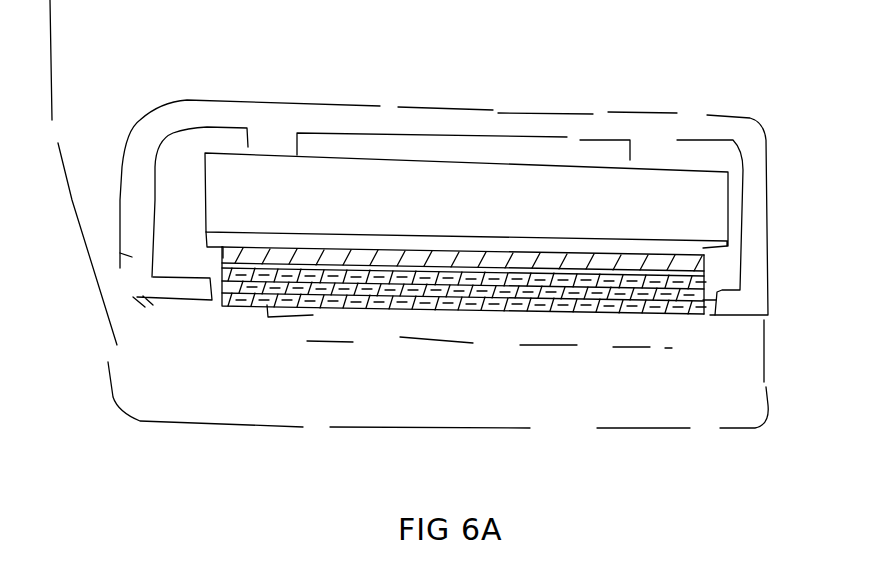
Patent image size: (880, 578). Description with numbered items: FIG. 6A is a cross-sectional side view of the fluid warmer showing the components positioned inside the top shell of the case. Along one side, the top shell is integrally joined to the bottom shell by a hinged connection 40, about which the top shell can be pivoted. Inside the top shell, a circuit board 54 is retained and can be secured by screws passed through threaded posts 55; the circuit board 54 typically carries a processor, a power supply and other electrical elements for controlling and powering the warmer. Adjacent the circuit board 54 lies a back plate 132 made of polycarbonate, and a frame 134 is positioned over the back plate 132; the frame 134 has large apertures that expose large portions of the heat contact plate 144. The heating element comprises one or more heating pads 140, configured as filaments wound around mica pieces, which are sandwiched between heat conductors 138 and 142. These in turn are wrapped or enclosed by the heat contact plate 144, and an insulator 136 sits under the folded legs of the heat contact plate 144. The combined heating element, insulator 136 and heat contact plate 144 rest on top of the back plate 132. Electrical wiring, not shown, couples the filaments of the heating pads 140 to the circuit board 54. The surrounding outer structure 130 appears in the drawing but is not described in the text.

The hinged connection 40 is at (157, 276).
The circuit board 54 is at (466, 199).
The threaded posts 55 is at (306, 145).
The bezel frame 130 is at (200, 113).
The back plate 132 is at (703, 250).
The frame 134 is at (700, 258).
The insulator 136 is at (641, 317).
The heat conductor 138 is at (302, 310).
The heating pads 140 is at (500, 310).
The heat conductor 142 is at (318, 308).
The heat contact plate 144 is at (583, 313).